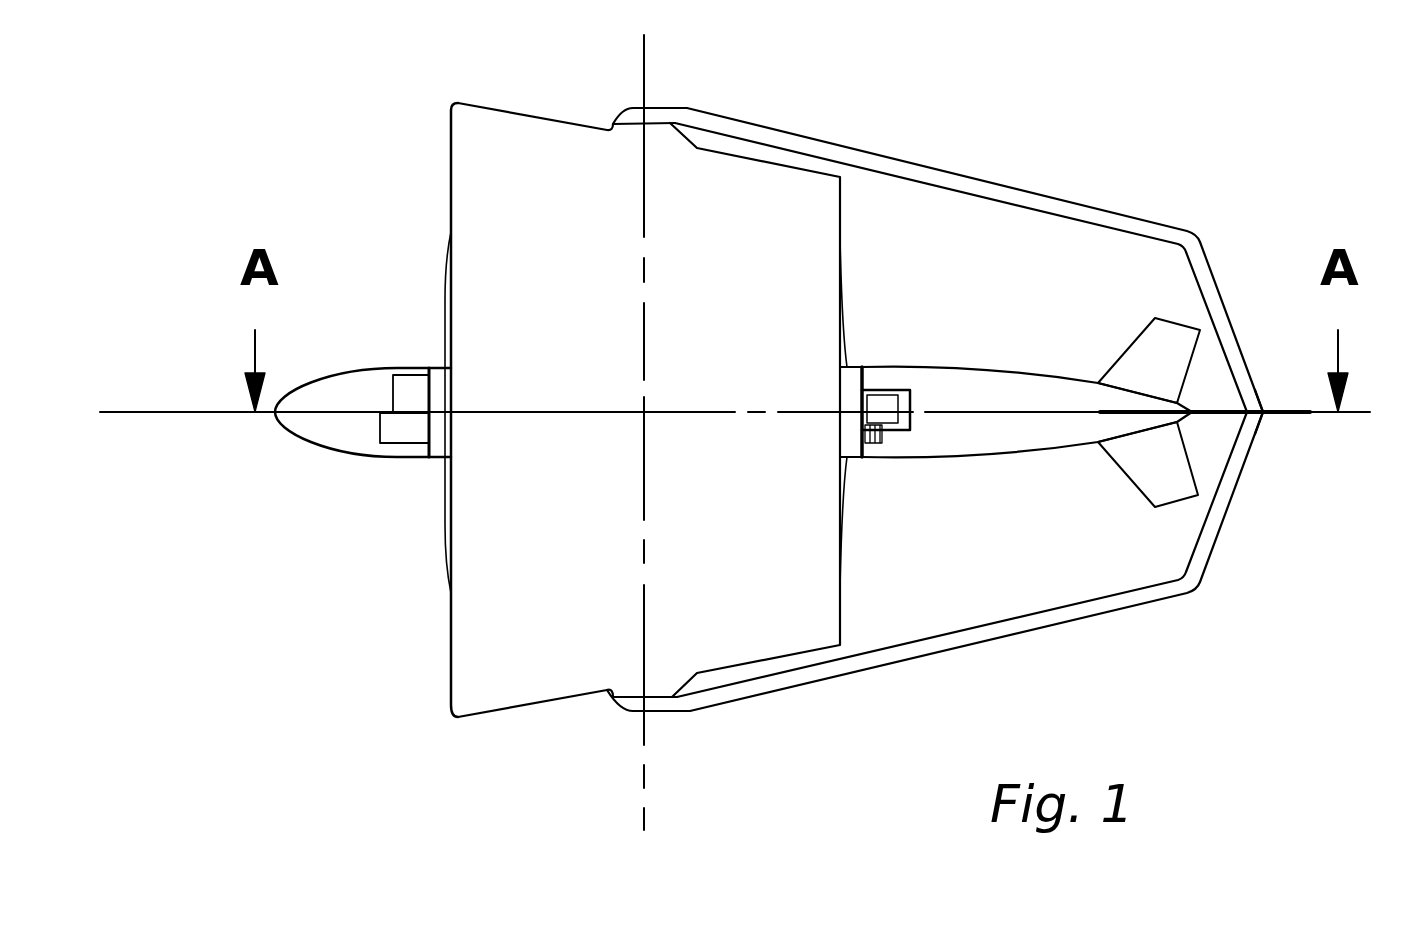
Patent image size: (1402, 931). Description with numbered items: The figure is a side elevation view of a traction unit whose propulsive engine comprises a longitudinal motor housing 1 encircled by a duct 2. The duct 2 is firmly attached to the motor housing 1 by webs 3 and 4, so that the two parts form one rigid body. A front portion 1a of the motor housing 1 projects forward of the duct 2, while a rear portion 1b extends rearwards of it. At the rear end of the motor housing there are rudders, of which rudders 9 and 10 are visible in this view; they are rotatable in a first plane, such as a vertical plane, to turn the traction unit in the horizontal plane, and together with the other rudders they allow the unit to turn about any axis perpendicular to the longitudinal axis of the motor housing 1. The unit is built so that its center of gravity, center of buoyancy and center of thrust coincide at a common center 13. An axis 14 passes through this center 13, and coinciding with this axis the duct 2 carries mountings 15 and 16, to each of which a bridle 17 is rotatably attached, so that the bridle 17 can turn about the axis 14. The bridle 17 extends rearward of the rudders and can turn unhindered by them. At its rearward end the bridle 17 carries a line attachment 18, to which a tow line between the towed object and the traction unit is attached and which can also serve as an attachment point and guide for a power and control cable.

The motor housing 1 is at (733, 422).
The front portion of the motor housing 1a is at (337, 440).
The rear portion of the motor housing 1b is at (1008, 448).
The duct 2 is at (503, 137).
The web 3 is at (847, 328).
The web 4 is at (443, 290).
The rudder 9 is at (1185, 480).
The rudder 10 is at (1183, 338).
The common center of gravity, center of buoyancy and center of thrust 13 is at (647, 410).
The axis 14 is at (646, 218).
The mounting 15 is at (657, 711).
The mounting 16 is at (660, 108).
The bridle 17 is at (1047, 192).
The line attachment 18 is at (1267, 412).